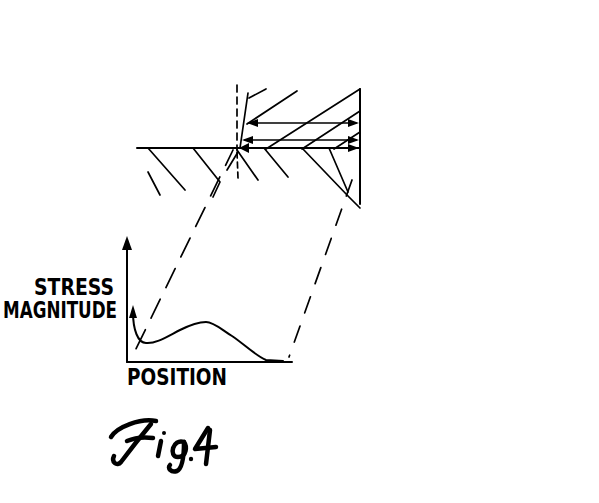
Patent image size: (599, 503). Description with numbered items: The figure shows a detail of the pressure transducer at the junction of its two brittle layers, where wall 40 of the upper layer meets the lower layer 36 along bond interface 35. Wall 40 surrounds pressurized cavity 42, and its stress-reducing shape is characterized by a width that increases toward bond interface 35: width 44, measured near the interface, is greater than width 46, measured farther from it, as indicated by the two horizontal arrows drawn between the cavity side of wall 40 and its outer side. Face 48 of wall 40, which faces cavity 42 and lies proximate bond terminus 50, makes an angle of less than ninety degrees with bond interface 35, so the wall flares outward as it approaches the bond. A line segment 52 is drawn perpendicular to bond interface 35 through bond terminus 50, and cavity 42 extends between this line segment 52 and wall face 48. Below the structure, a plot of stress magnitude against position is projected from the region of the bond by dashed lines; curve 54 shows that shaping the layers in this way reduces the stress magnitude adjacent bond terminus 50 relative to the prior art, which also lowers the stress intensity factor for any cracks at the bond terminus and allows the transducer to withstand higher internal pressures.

The bond interface 35 is at (350, 199).
The layer 36 is at (225, 177).
The wall 40 is at (310, 93).
The pressurized cavity 42 is at (178, 88).
The width 44 is at (339, 140).
The width 46 is at (389, 133).
The wall face 48 is at (247, 93).
The bond terminus 50 is at (203, 132).
The line segment 52 is at (265, 195).
The stress magnitude curve 54 is at (206, 317).